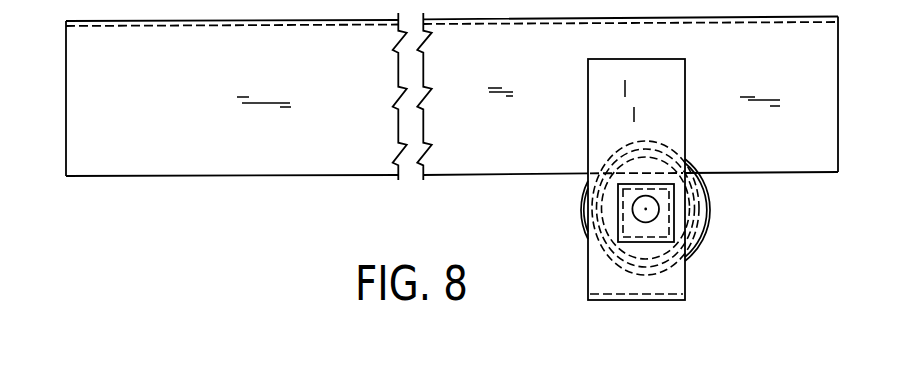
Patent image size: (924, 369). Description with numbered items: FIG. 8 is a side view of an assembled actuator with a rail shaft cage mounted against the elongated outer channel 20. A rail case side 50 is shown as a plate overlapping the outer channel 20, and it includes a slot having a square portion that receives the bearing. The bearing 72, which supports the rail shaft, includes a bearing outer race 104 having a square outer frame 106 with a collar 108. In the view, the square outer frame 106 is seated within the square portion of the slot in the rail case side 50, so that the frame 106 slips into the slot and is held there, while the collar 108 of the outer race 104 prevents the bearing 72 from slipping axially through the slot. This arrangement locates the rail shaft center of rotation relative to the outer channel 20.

The outer channel 20 is at (840, 78).
The rail case side 50 is at (587, 142).
The bearing 72 is at (678, 220).
The bearing outer race 104 is at (667, 232).
The square outer frame 106 is at (663, 198).
The collar 108 is at (665, 186).